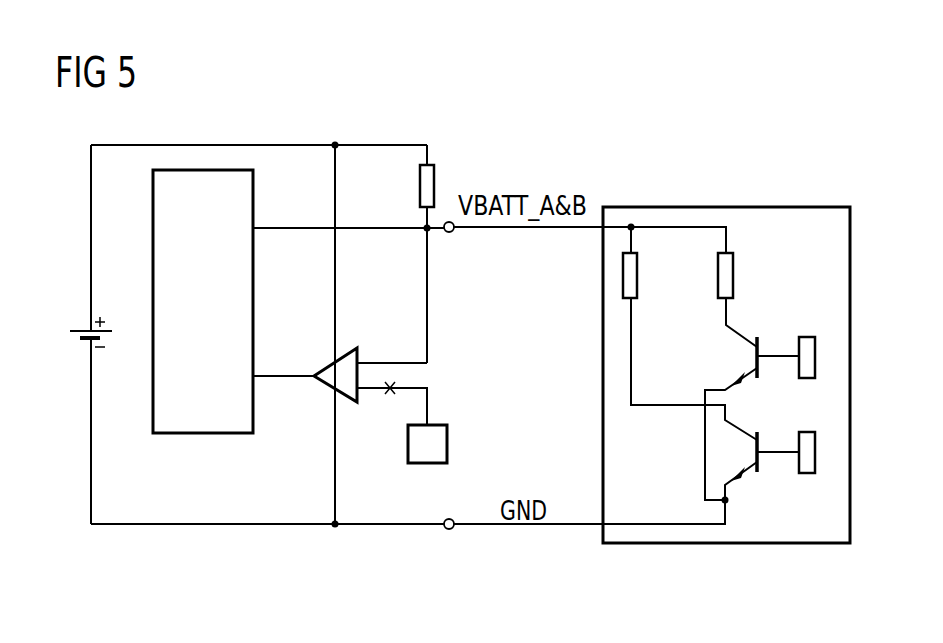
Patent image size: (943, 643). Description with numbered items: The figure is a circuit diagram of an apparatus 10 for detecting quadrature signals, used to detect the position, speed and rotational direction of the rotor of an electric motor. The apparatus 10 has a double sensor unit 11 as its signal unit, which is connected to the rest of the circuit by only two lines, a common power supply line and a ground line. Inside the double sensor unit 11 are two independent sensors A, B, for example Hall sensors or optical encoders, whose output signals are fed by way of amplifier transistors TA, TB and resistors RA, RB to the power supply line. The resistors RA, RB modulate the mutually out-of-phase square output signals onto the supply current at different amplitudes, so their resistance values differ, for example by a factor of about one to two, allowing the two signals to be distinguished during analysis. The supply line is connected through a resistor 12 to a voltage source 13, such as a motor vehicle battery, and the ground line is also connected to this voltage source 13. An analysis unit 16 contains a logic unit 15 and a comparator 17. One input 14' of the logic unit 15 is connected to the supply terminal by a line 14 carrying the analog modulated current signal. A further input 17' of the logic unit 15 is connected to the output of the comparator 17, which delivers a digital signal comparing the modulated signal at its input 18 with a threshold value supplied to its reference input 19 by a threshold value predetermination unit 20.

The apparatus 10 is at (500, 152).
The double sensor unit 11 is at (726, 407).
The resistor 12 is at (420, 190).
The voltage source 13 is at (83, 330).
The line 14 is at (340, 259).
The input 14' is at (273, 200).
The logic unit 15 is at (203, 434).
The analysis unit 16 is at (353, 463).
The comparator 17 is at (320, 364).
The further input 17' is at (283, 402).
The input 18 is at (390, 362).
The reference input 19 is at (387, 394).
The threshold value predetermination unit 20 is at (447, 443).
The resistor RB is at (637, 276).
The resistor RA is at (733, 276).
The transistor TA is at (754, 358).
The transistor TB is at (757, 437).
The sensor A is at (813, 335).
The sensor B is at (812, 474).